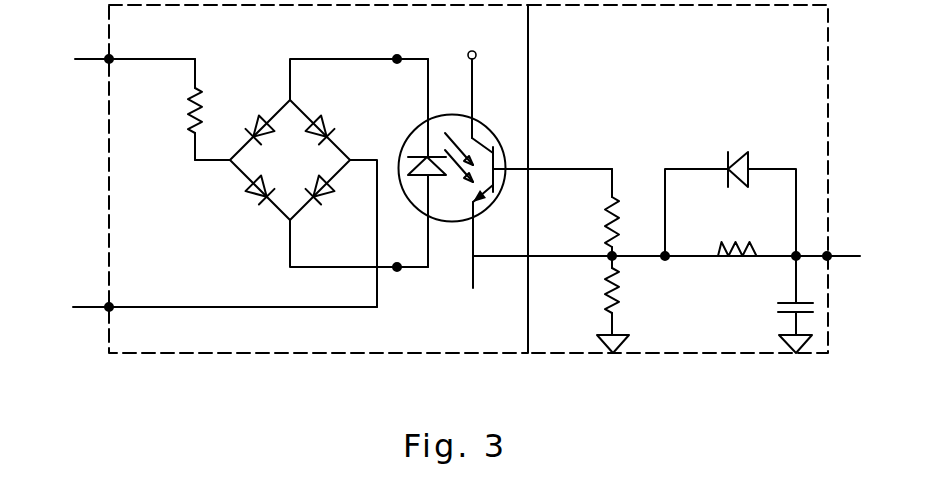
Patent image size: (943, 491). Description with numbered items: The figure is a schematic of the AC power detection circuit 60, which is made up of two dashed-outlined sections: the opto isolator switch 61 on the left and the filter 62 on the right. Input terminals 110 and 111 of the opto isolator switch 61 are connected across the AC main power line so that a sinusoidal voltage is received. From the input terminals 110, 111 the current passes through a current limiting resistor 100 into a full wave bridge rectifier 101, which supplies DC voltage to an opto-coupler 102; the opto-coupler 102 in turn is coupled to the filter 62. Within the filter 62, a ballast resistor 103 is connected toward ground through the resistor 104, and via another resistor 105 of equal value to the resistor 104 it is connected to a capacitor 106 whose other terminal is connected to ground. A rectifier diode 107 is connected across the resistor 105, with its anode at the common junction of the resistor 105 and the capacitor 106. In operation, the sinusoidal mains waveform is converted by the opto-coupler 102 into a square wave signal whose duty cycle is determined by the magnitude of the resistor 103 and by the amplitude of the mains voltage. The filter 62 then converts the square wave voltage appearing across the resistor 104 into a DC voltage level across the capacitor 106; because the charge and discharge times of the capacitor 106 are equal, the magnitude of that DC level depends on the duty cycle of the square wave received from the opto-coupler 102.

The AC power detection circuit 60 is at (352, 368).
The opto isolator switch 61 is at (248, 353).
The filter 62 is at (670, 353).
The current limiting resistor 100 is at (192, 103).
The full wave bridge rectifier 101 is at (268, 117).
The opto-coupler 102 is at (443, 223).
The ballast resistor 103 is at (610, 220).
The resistor 104 is at (610, 297).
The resistor 105 is at (742, 260).
The capacitor 106 is at (783, 313).
The rectifier diode 107 is at (742, 153).
The input terminal 110 is at (87, 55).
The input terminal 111 is at (92, 305).